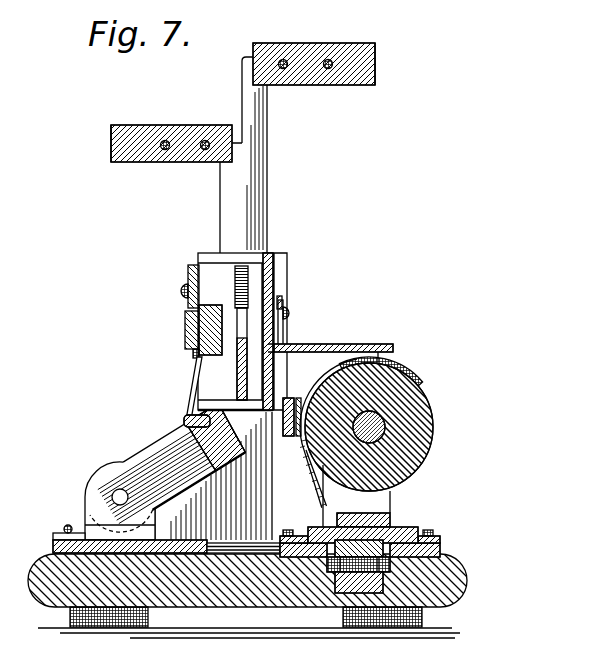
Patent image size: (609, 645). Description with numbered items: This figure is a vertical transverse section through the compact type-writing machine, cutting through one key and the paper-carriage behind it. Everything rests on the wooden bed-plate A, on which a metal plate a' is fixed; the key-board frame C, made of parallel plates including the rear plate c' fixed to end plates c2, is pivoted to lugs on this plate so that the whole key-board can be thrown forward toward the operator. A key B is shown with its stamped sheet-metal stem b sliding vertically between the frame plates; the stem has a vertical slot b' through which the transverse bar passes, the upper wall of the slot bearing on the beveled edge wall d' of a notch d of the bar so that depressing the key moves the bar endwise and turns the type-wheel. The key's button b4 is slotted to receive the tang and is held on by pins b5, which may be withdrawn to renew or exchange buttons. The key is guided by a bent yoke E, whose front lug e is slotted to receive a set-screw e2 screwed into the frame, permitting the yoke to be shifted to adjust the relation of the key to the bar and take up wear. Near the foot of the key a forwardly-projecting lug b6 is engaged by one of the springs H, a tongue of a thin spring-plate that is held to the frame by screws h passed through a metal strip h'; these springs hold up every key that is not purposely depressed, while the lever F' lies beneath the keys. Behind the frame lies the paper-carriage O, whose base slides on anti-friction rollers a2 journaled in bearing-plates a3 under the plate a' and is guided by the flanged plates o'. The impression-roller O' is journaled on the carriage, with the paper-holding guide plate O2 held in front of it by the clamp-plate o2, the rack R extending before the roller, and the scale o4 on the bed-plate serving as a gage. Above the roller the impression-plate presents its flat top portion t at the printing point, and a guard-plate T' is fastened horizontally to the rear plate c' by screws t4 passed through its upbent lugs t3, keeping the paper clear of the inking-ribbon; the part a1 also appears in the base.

The key B is at (243, 86).
The key stem b is at (243, 228).
The vertical slot b' is at (259, 331).
The key button b4 is at (111, 146).
The pin b5 is at (205, 163).
The forwardly-projecting lug b6 is at (184, 421).
The bent yoke E is at (228, 258).
The key-board frame C is at (206, 266).
The rear plate c' is at (279, 320).
The end plate c2 is at (268, 479).
The top notch d is at (241, 354).
The beveled edge wall d' is at (249, 287).
The metal strip h' is at (174, 286).
The screw h is at (173, 295).
The set-screw e2 is at (186, 329).
The lug e is at (193, 355).
The spring H is at (190, 382).
The arm F' is at (174, 471).
The screw t4 is at (289, 314).
The upbent lug t3 is at (278, 349).
The guard-plate T' is at (348, 352).
The flat top portion t is at (379, 344).
The paper-carriage O is at (377, 445).
The impression-roller O' is at (397, 405).
The paper-holding and guide plate O2 is at (318, 461).
The rack R is at (289, 398).
The bed-plate A is at (247, 596).
The scale o4 is at (53, 537).
The metal plate a' is at (261, 560).
The flanged guide plate o' is at (361, 524).
The clamp-plate o2 is at (392, 520).
The bearing-plate a3 is at (390, 575).
The anti-friction roller a2 is at (345, 593).
The bolt a1 is at (330, 570).